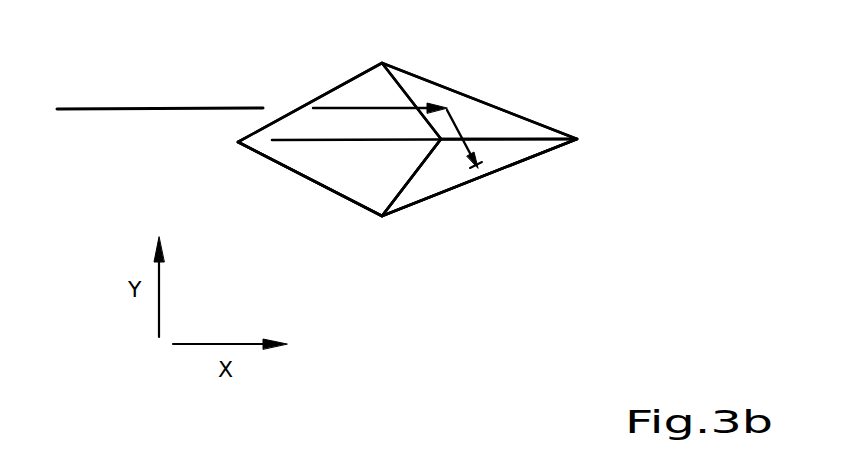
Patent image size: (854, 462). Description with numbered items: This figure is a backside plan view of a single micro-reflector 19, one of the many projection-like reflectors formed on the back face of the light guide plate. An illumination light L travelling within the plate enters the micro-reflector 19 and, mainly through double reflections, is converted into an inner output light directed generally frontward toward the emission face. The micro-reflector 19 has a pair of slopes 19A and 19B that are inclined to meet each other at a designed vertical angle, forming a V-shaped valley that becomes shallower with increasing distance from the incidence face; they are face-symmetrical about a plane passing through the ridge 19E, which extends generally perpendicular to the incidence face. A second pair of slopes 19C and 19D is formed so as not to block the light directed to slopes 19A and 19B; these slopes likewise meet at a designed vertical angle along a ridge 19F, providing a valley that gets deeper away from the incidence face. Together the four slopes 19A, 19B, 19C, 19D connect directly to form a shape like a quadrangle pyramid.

The illumination light L is at (187, 108).
The micro-reflector 19 is at (335, 192).
The slope 19A is at (517, 155).
The slope 19B is at (463, 113).
The slope 19C is at (362, 183).
The slope 19D is at (370, 95).
The ridge 19E is at (518, 158).
The ridge 19F is at (315, 141).